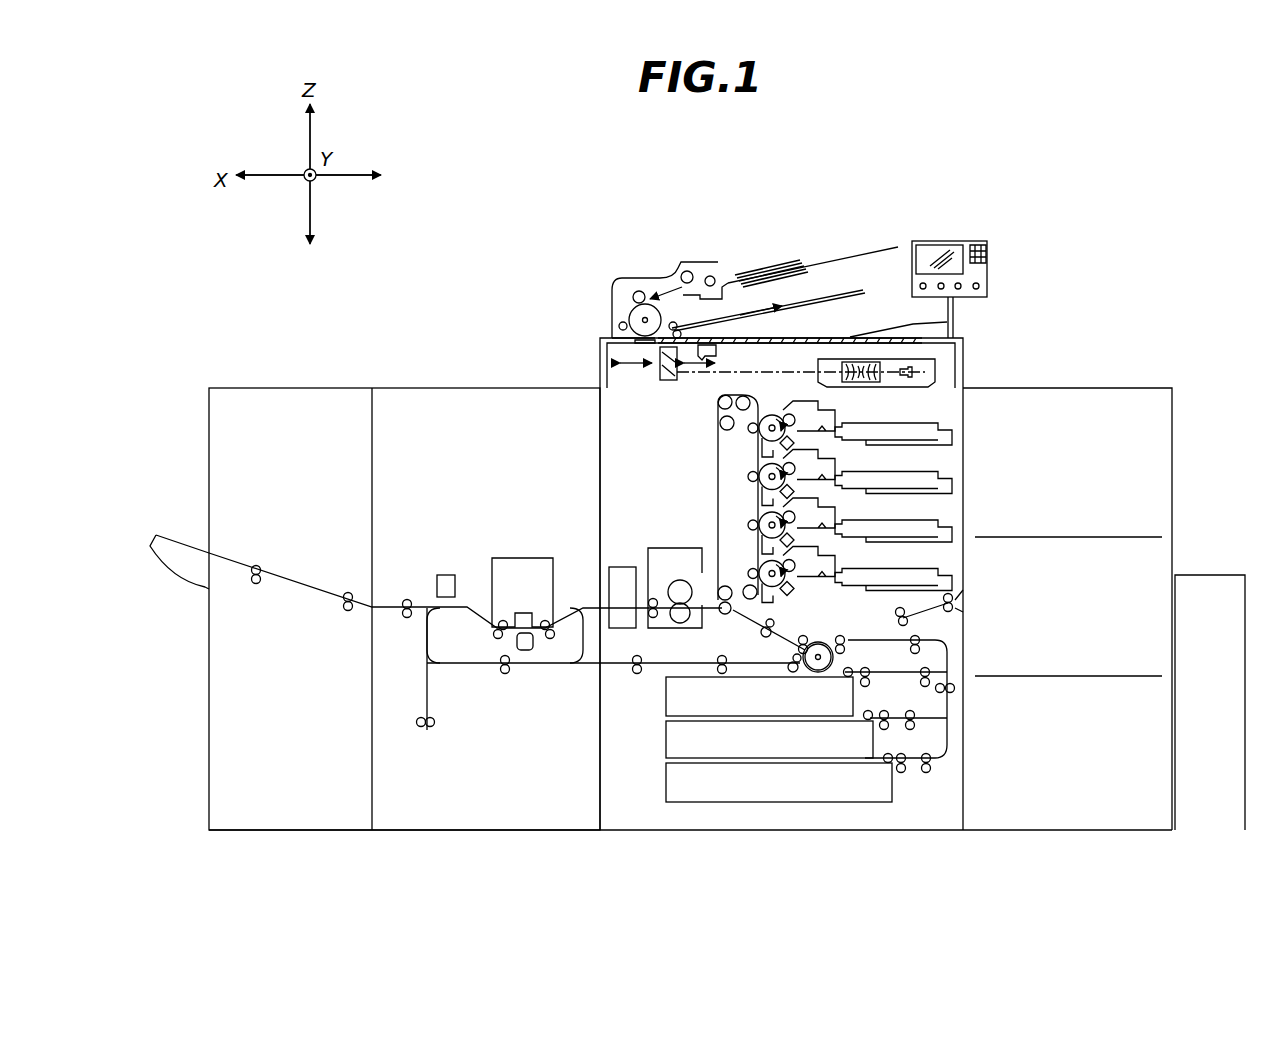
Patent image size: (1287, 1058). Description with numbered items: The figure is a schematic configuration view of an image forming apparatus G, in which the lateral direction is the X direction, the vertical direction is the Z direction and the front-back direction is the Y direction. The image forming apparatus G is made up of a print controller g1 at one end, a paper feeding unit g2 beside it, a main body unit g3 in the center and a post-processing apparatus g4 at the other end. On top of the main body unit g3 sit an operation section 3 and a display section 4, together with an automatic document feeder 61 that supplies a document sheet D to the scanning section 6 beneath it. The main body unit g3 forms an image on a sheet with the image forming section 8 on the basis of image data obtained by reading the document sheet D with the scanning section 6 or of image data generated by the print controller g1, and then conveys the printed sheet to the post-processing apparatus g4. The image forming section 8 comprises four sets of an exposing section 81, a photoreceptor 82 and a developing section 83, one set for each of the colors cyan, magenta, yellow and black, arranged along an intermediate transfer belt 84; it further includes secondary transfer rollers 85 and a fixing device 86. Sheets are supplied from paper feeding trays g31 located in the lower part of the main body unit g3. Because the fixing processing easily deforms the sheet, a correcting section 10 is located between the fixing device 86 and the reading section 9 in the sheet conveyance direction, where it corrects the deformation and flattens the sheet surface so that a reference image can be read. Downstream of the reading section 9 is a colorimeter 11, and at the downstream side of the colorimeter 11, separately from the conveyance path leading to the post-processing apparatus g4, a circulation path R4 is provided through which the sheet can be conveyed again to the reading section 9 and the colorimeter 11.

The image forming apparatus G is at (997, 180).
The operation section 3 is at (988, 258).
The display section 4 is at (927, 253).
The automatic document feeder 61 is at (899, 250).
The document sheet D is at (773, 263).
The scanning section 6 is at (615, 363).
The main body unit g3 is at (582, 385).
The post-processing apparatus g4 is at (272, 387).
The paper feeding unit g2 is at (1130, 387).
The print controller g1 is at (1225, 575).
The image forming section 8 is at (616, 446).
The intermediate transfer belt 84 is at (718, 440).
The photoreceptor 82 is at (770, 477).
The developing section 83 is at (836, 461).
The exposing section 81 is at (953, 483).
The secondary transfer rollers 85 is at (733, 607).
The fixing device 86 is at (658, 548).
The correcting section 10 is at (613, 567).
The reading section 9 is at (482, 553).
The colorimeter 11 is at (437, 575).
The circulation path R4 is at (456, 677).
The paper feeding trays g31 is at (731, 808).